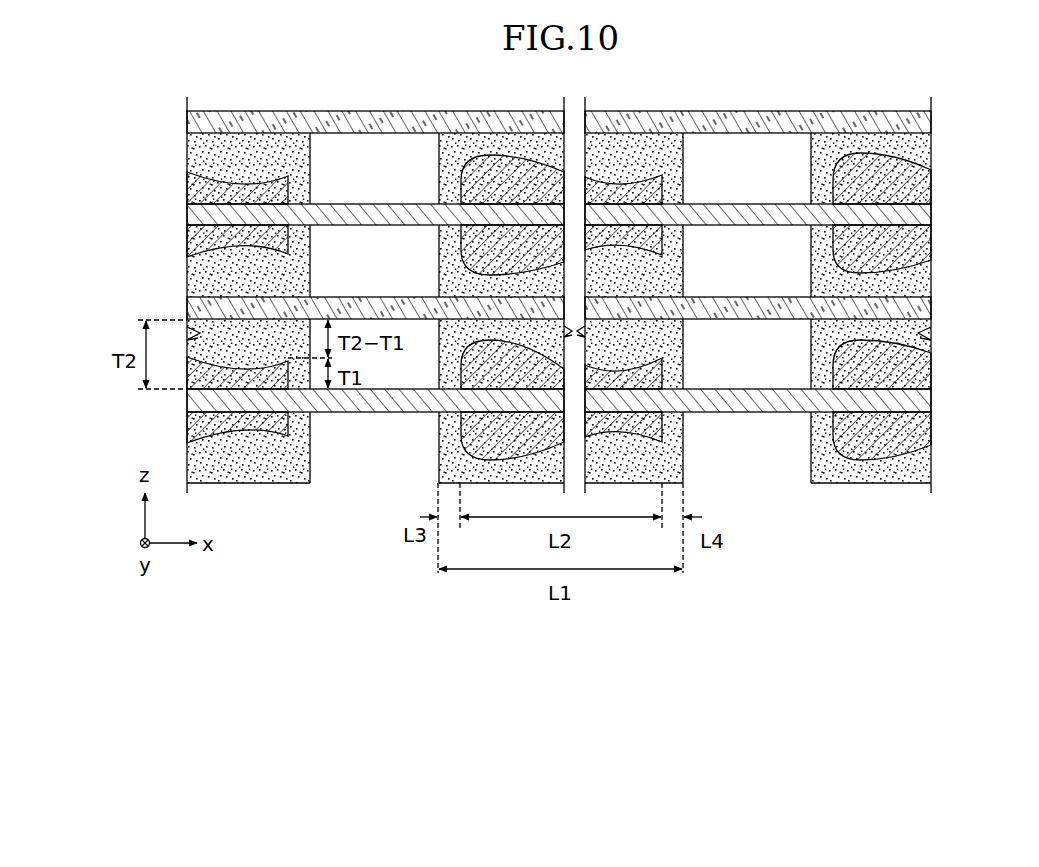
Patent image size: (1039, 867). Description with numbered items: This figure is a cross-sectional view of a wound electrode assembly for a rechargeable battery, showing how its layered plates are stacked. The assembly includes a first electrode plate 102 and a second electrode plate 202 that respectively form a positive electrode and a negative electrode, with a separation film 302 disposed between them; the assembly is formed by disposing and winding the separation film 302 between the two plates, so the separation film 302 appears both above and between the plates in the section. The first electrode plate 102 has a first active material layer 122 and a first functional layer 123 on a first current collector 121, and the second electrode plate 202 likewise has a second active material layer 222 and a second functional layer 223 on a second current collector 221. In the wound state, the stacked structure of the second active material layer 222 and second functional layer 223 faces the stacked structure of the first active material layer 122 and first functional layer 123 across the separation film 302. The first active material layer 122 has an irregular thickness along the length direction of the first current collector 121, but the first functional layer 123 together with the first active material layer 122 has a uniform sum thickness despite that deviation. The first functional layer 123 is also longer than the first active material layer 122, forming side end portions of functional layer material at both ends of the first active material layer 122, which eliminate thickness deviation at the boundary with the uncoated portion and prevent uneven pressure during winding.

The separation film 302 is at (922, 118).
The second electrode plate 202 is at (102, 133).
The second functional layer 223 is at (918, 142).
The second active material layer 222 is at (920, 184).
The second current collector 221 is at (920, 213).
The first electrode plate 102 is at (103, 320).
The first functional layer 123 is at (918, 330).
The first active material layer 122 is at (925, 372).
The first current collector 121 is at (920, 398).